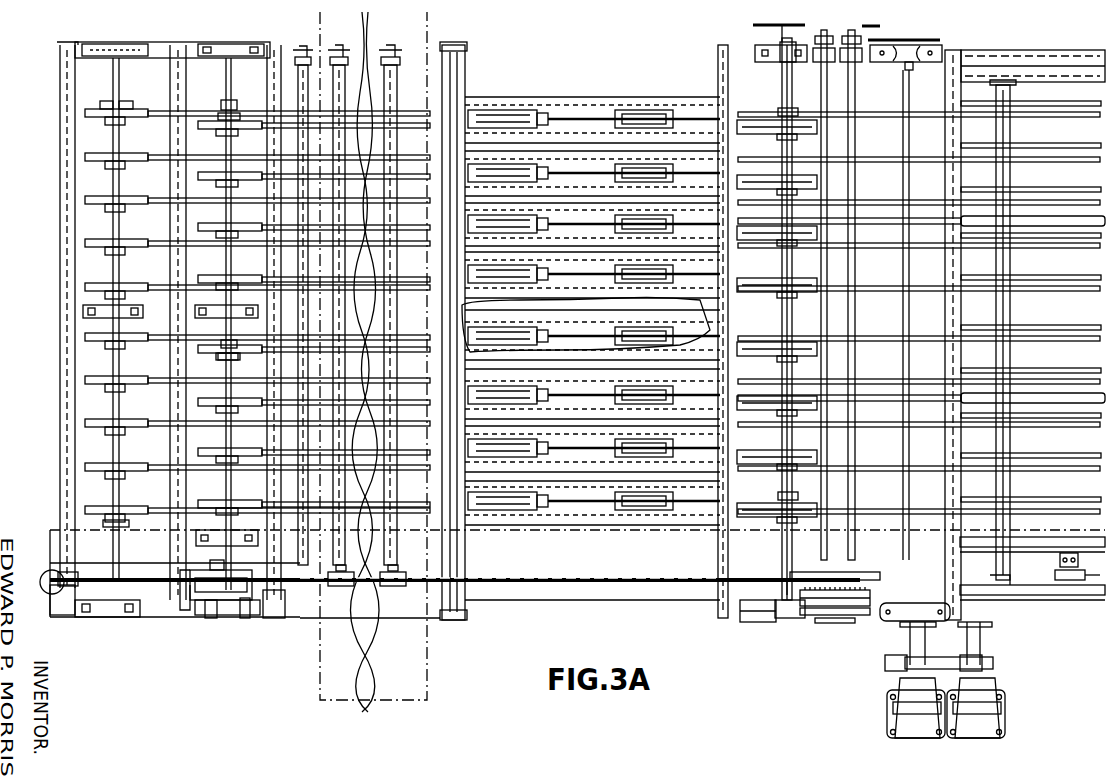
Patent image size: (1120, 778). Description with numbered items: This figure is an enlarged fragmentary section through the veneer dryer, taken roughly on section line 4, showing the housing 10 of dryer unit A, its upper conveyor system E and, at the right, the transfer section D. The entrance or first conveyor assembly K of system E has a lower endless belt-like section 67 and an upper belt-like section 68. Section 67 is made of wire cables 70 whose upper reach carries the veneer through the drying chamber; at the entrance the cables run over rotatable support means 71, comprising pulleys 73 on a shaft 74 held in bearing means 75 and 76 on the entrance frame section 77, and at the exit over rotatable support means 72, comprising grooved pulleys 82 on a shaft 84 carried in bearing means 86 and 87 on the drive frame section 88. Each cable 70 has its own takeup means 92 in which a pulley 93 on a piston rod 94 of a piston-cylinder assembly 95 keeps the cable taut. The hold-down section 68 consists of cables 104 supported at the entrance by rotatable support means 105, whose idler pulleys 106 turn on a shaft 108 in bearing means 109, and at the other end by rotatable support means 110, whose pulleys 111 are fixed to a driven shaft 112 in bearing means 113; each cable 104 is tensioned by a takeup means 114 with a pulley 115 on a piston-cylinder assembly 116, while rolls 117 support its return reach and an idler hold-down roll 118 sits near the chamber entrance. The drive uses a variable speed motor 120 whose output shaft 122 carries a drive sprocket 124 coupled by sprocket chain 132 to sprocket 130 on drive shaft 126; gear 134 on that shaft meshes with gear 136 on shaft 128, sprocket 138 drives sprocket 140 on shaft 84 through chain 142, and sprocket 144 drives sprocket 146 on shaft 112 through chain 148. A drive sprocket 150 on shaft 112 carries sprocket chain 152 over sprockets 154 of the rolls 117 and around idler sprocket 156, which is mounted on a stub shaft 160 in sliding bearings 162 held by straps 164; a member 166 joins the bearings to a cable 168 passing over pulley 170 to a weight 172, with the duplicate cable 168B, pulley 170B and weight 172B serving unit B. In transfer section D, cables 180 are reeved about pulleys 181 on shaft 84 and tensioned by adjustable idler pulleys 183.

The section line 4 is at (48, 590).
The housing 10 is at (427, 650).
The lower endless belt-like section 67 is at (153, 95).
The upper endless belt-like section 68 is at (235, 276).
The wire cables 70 is at (150, 160).
The rotatable support means 71 is at (105, 105).
The rotatable support means 72 is at (930, 445).
The pulleys 73 is at (127, 502).
The shaft 74 is at (120, 400).
The bearing means 75 is at (115, 620).
The bearing means 76 is at (114, 43).
The entrance frame section 77 is at (66, 45).
The pulleys 82 is at (930, 120).
The shaft 84 is at (945, 556).
The bearing means 86 is at (905, 605).
The bearing means 87 is at (913, 62).
The drive frame section 88 is at (718, 45).
The takeup means 92 is at (605, 345).
The pulley 93 is at (660, 322).
The piston rod 94 is at (598, 110).
The piston-cylinder assembly 95 is at (526, 330).
The cables 104 is at (412, 120).
The rotatable support means 105 is at (238, 108).
The idler pulleys 106 is at (222, 128).
The shaft 108 is at (224, 104).
The bearing means 109 is at (232, 43).
The rotatable support means 110 is at (770, 90).
The pulleys 111 is at (810, 115).
The driven shaft 112 is at (782, 552).
The bearing means 113 is at (775, 43).
The takeup means 114 is at (571, 110).
The pulleys 115 is at (680, 110).
The piston-cylinder assemblies 116 is at (482, 110).
The rolls 117 is at (345, 60).
The idler hold-down roll 118 is at (300, 58).
The variable speed motor 120 is at (990, 710).
The output shaft 122 is at (985, 662).
The drive sprocket 124 is at (993, 640).
The drive shaft 126 is at (906, 66).
The shaft 128 is at (904, 82).
The sprocket 130 is at (796, 620).
The sprocket chain 132 is at (862, 622).
The gear 134 is at (845, 580).
The gear 136 is at (870, 612).
The sprocket 138 is at (823, 30).
The sprocket 140 is at (930, 44).
The sprocket chain 142 is at (866, 42).
The sprocket 144 is at (866, 28).
The sprocket 146 is at (778, 24).
The sprocket chain 148 is at (852, 30).
The drive sprocket 150 is at (718, 583).
The sprocket chain 152 is at (514, 580).
The sprockets 154 is at (396, 588).
The idler sprocket 156 is at (270, 618).
The stub shaft 160 is at (215, 600).
The bearings 162 is at (230, 615).
The straps 164 is at (246, 618).
The member 166 is at (190, 608).
The cable 168 is at (100, 618).
The pulley 170 is at (80, 612).
The weight 172 is at (55, 590).
The cable 168B is at (1058, 575).
The pulley 170B is at (1092, 545).
The weight 172B is at (1065, 580).
The cables 180 is at (1092, 145).
The pulleys 181 is at (935, 118).
The idler pulleys 183 is at (1012, 165).
The dryer unit A is at (366, 706).
The transfer section D is at (970, 50).
The conveyor system E is at (55, 178).
The entrance conveyor assembly K is at (55, 362).